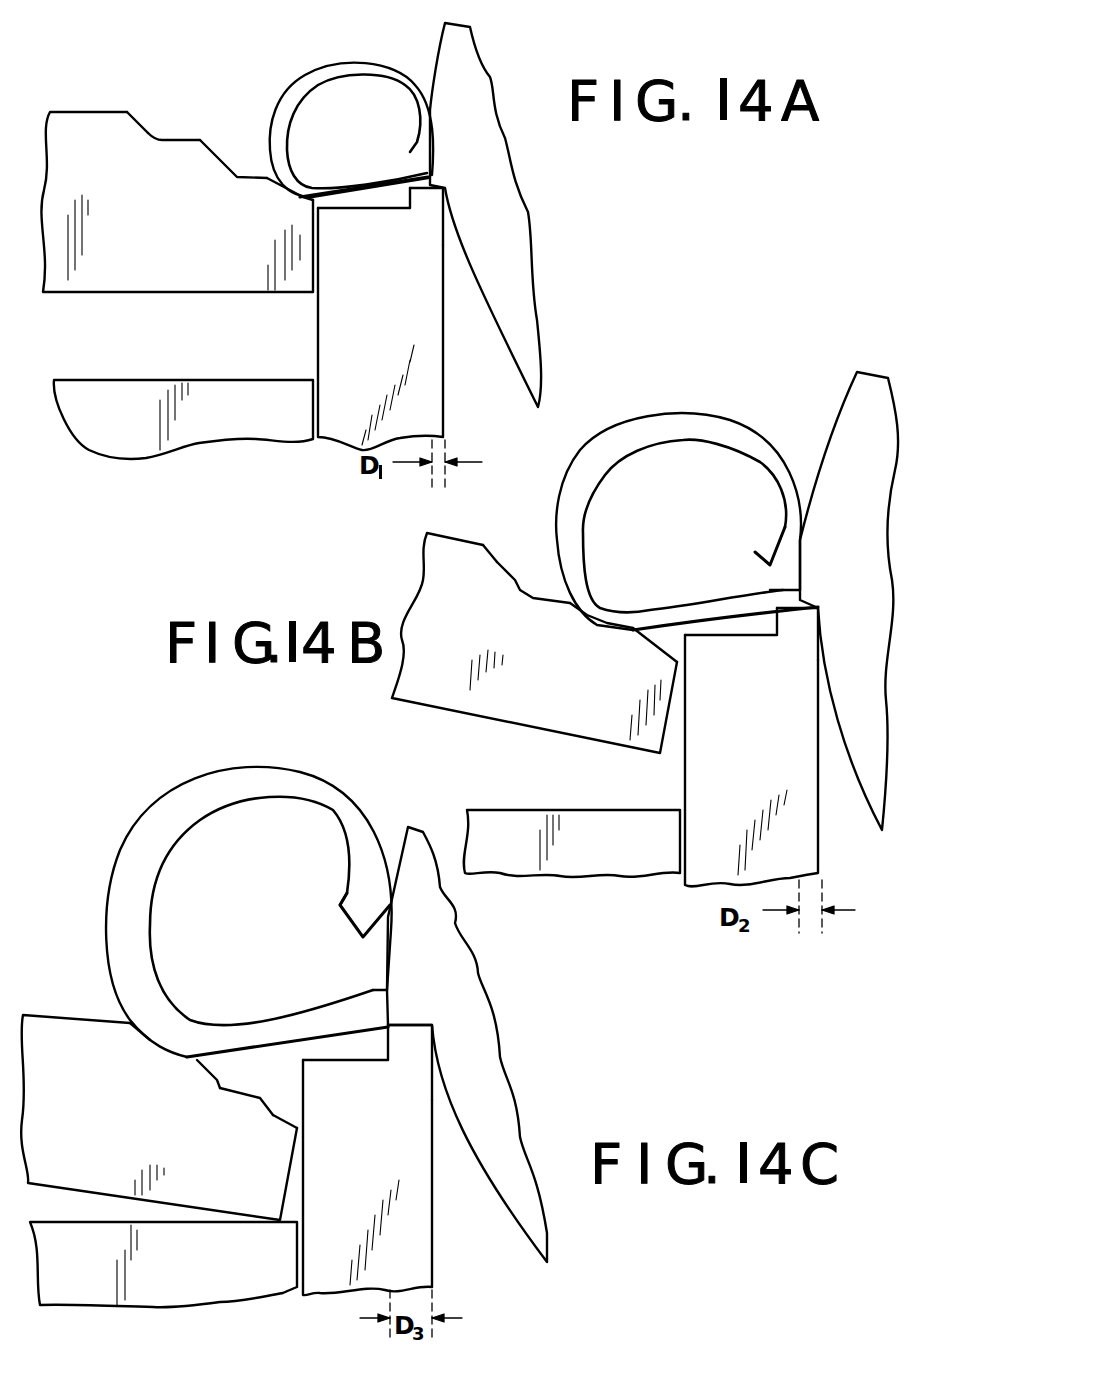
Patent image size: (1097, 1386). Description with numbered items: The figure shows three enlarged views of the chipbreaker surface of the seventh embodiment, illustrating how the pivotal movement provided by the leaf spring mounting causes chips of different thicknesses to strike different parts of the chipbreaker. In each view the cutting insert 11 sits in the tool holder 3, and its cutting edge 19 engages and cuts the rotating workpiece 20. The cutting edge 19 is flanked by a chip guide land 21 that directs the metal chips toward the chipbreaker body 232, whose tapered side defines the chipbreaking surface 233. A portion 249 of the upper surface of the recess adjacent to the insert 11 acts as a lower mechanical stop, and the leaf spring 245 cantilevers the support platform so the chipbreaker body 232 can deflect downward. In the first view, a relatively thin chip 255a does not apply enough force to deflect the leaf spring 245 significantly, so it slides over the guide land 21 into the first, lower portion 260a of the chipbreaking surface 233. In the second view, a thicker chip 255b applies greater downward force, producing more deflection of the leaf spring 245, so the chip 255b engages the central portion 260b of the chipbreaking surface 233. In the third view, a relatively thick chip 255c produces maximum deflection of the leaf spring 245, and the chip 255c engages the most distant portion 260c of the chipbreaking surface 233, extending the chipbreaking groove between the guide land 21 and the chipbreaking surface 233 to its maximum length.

In FIG. 14A, the tool holder 3 is at (183, 419).
In FIG. 14B, the tool holder 3 is at (572, 843).
In FIG. 14C, the tool holder 3 is at (163, 1264).
In FIG. 14A, the cutting insert 11 is at (392, 350).
In FIG. 14B, the cutting insert 11 is at (765, 775).
In FIG. 14C, the cutting insert 11 is at (375, 1195).
In FIG. 14A, the cutting edge 19 is at (420, 190).
In FIG. 14B, the cutting edge 19 is at (797, 610).
In FIG. 14C, the cutting edge 19 is at (405, 1027).
In FIG. 14A, the rotating workpiece 20 is at (500, 190).
In FIG. 14B, the rotating workpiece 20 is at (865, 565).
In FIG. 14C, the rotating workpiece 20 is at (447, 962).
In FIG. 14A, the chip guide land 21 is at (372, 208).
In FIG. 14B, the chip guide land 21 is at (725, 630).
In FIG. 14C, the chip guide land 21 is at (343, 1053).
In FIG. 14A, the chipbreaker body 232 is at (163, 268).
In FIG. 14B, the chipbreaker body 232 is at (585, 713).
In FIG. 14C, the chipbreaker body 232 is at (108, 1172).
In FIG. 14A, the chipbreaking surface 233 is at (193, 134).
In FIG. 14B, the chipbreaking surface 233 is at (517, 570).
In FIG. 14C, the chipbreaking surface 233 is at (222, 1076).
In FIG. 14C, the leaf spring 245 is at (290, 1223).
In FIG. 14A, the lower mechanical stop portion 249 is at (287, 382).
In FIG. 14B, the lower mechanical stop portion 249 is at (653, 813).
In FIG. 14A, the thin chip 255a is at (282, 156).
In FIG. 14B, the medium thickness chip 255b is at (575, 542).
In FIG. 14C, the thick chip 255c is at (133, 915).
In FIG. 14A, the first, lower portion of the chipbreaking surface 260a is at (307, 198).
In FIG. 14B, the first, lower portion of the chipbreaking surface 260a is at (658, 643).
In FIG. 14C, the first, lower portion of the chipbreaking surface 260a is at (270, 1115).
In FIG. 14A, the central portion of the chipbreaking surface 260b is at (222, 162).
In FIG. 14B, the central portion of the chipbreaking surface 260b is at (586, 613).
In FIG. 14C, the central portion of the chipbreaking surface 260b is at (210, 1077).
In FIG. 14A, the most distant portion of the chipbreaking surface 260c is at (145, 133).
In FIG. 14B, the most distant portion of the chipbreaking surface 260c is at (497, 562).
In FIG. 14C, the most distant portion of the chipbreaking surface 260c is at (150, 1045).